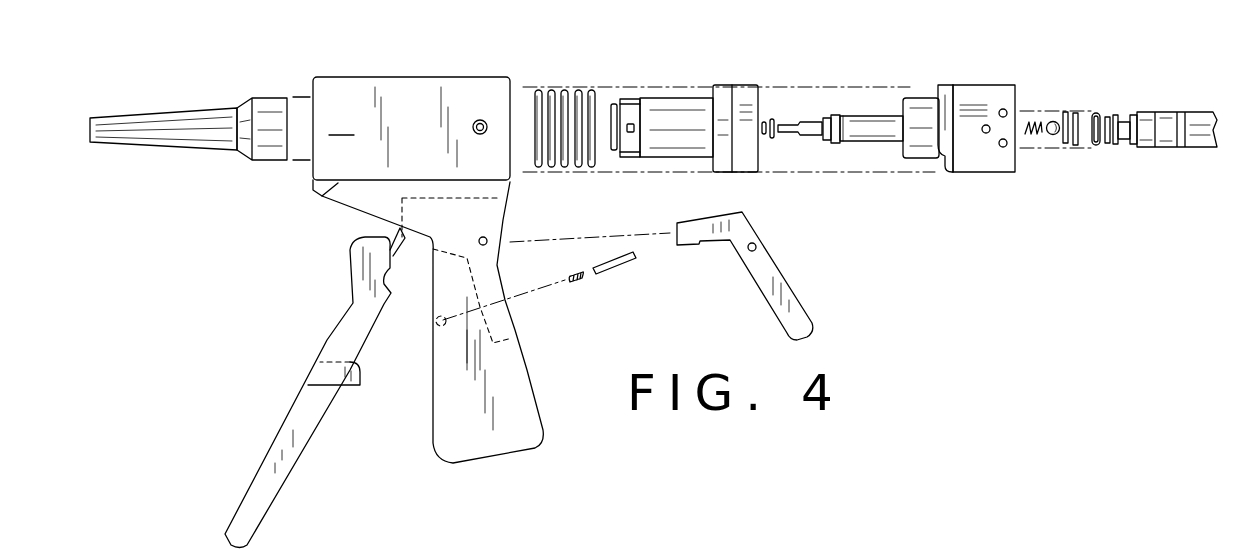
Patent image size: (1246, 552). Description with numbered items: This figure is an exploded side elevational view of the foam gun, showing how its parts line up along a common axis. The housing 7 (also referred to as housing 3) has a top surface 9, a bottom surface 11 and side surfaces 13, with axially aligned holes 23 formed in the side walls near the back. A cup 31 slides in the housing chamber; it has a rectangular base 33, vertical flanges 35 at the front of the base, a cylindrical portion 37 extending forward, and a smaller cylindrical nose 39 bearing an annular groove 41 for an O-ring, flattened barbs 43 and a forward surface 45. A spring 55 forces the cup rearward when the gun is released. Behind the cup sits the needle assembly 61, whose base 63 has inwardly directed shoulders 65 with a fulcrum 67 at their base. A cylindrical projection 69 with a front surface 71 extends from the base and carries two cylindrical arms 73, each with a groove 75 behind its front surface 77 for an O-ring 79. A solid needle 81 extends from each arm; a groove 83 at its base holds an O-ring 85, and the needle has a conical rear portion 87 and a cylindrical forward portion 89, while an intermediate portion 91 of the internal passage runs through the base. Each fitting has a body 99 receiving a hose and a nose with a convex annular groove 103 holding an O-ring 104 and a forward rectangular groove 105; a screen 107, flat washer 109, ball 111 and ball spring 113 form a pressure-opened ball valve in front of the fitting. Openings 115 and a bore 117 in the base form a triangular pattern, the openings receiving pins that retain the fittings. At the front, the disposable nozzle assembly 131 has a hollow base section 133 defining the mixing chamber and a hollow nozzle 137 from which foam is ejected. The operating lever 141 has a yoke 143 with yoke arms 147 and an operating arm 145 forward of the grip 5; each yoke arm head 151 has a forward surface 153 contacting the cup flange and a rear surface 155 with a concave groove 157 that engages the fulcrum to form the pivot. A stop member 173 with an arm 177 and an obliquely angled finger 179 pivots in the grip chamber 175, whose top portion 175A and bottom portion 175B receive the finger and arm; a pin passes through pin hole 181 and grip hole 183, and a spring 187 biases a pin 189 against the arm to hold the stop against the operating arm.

The housing 3 is at (388, 119).
The grip 5 is at (464, 322).
The housing 7 is at (388, 119).
The top surface 9 is at (333, 77).
The bottom surface 11 is at (318, 198).
The side surfaces 13 is at (388, 120).
The holes 23 is at (485, 121).
The cup 31 is at (690, 127).
The base 33 is at (748, 85).
The vertical flanges 35 is at (720, 92).
The cylindrical portion 37 is at (655, 98).
The cylindrical nose 39 is at (628, 99).
The annular groove 41 is at (614, 104).
The barbs 43 is at (631, 133).
The forward surface 45 is at (614, 150).
The spring 55 is at (566, 92).
The needle assembly 61 is at (956, 122).
The base 63 is at (993, 129).
The shoulders 65 is at (945, 93).
The fulcrum 67 is at (938, 163).
The cylindrical projection 69 is at (913, 98).
The front surface 71 is at (905, 147).
The cylindrical arms 73 is at (870, 116).
The groove 75 is at (836, 115).
The front surface 77 is at (833, 141).
The O-ring 79 is at (772, 140).
The needle 81 is at (841, 109).
The groove 83 is at (826, 118).
The O-ring 85 is at (765, 136).
The conical rear portion 87 is at (805, 122).
The cylindrical forward portion 89 is at (784, 135).
The intermediate portion 91 is at (1148, 128).
The fitting body 99 is at (1180, 112).
The convex annular groove 103 is at (1125, 140).
The O-ring 104 is at (1118, 145).
The rectangular annular groove 105 is at (1097, 113).
The screen 107 is at (1077, 146).
The annular flat washer 109 is at (1066, 112).
The ball 111 is at (1053, 135).
The ball spring 113 is at (1034, 122).
The openings 115 is at (1003, 147).
The bore 117 is at (983, 133).
The nozzle assembly 131 is at (200, 87).
The hollow base section 133 is at (268, 97).
The hollow nozzle 137 is at (137, 113).
The operating lever 141 is at (288, 378).
The yoke 143 is at (311, 378).
The operating arm 145 is at (250, 512).
The yoke arms 147 is at (348, 330).
The head 151 is at (352, 268).
The forward surface 153 is at (350, 250).
The rear surface 155 is at (398, 232).
The concave groove 157 is at (386, 287).
The stop member 173 is at (691, 265).
The grip chamber 175 is at (504, 265).
The top portion of grip chamber 175A is at (506, 205).
The bottom portion of grip chamber 175B is at (488, 327).
The arm 177 is at (808, 298).
The finger 179 is at (690, 222).
The pin hole 181 is at (748, 250).
The hole 183 is at (488, 240).
The spring 187 is at (578, 284).
The pin 189 is at (620, 263).